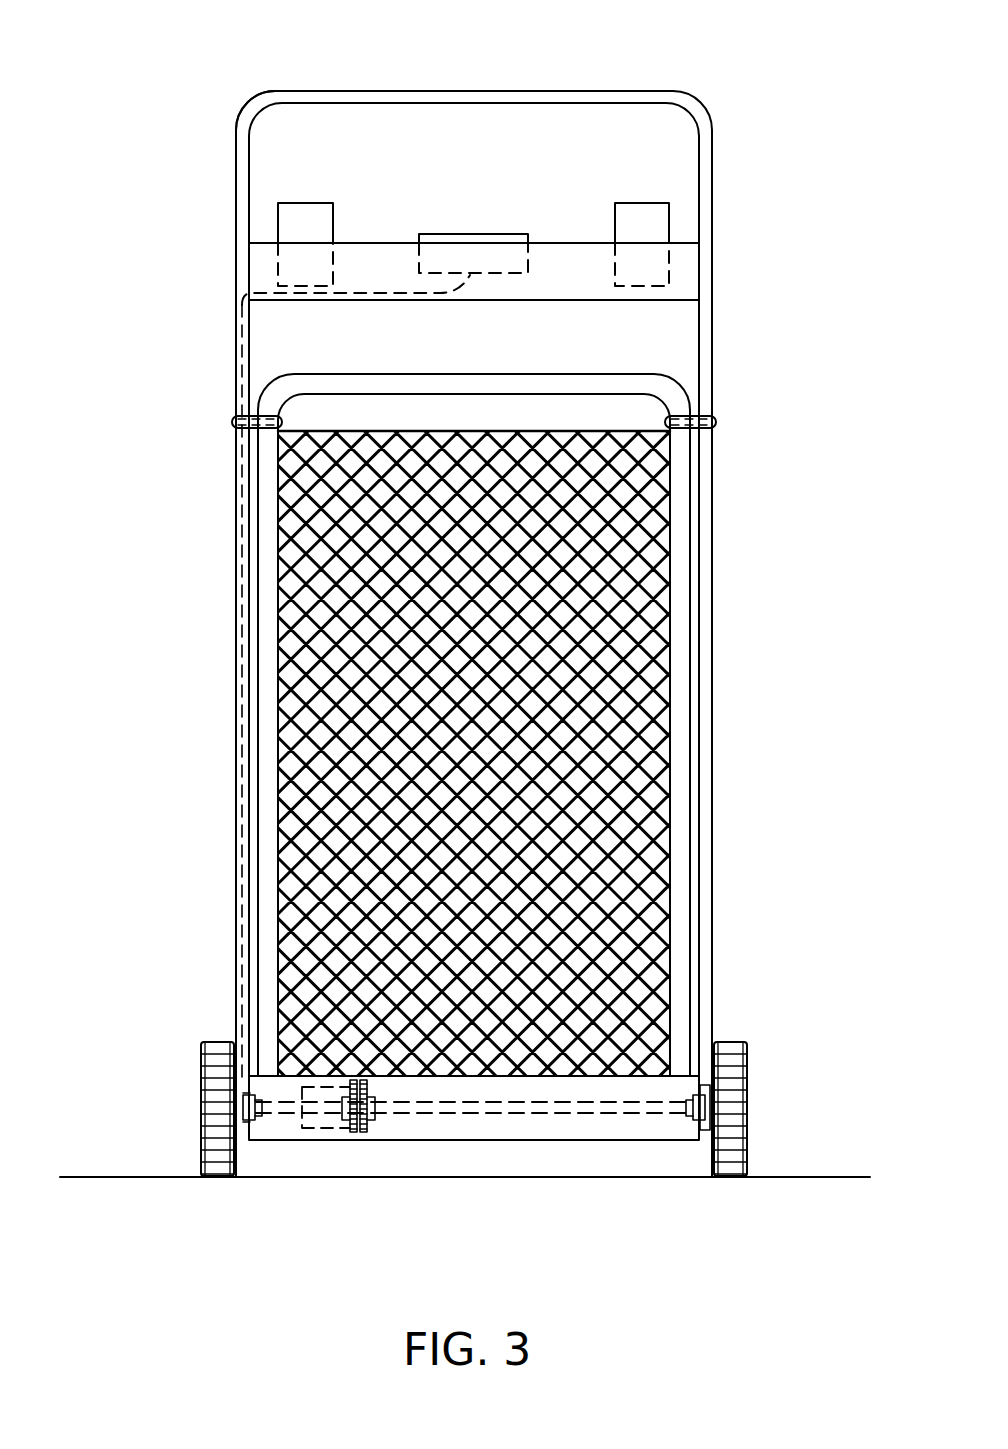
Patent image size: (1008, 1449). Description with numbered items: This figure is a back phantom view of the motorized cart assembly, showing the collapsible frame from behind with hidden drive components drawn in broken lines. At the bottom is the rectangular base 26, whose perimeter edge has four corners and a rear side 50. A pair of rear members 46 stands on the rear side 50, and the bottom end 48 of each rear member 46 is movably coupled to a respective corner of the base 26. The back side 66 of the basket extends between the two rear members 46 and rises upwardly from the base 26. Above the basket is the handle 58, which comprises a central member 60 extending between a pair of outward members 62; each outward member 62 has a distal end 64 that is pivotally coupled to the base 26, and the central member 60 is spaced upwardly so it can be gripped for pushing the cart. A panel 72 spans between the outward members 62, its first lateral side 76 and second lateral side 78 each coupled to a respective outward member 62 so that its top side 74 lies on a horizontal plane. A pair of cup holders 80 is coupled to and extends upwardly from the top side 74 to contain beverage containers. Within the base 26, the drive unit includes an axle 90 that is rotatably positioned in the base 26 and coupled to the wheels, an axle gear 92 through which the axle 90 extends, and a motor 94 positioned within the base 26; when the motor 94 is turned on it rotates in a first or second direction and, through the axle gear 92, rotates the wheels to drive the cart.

The base 26 is at (640, 1140).
The rear members 46 is at (258, 745).
The bottom end 48 is at (268, 1078).
The rear side 50 is at (483, 1127).
The handle 58 is at (245, 103).
The central member 60 is at (480, 91).
The outward members 62 is at (236, 202).
The distal end 64 is at (243, 1132).
The back side 66 is at (605, 670).
The panel 72 is at (687, 243).
The top side 74 is at (573, 243).
The first lateral side 76 is at (700, 277).
The second lateral side 78 is at (249, 267).
The cup holders 80 is at (312, 203).
The axle 90 is at (562, 1113).
The axle gear 92 is at (368, 1130).
The motor 94 is at (328, 1130).